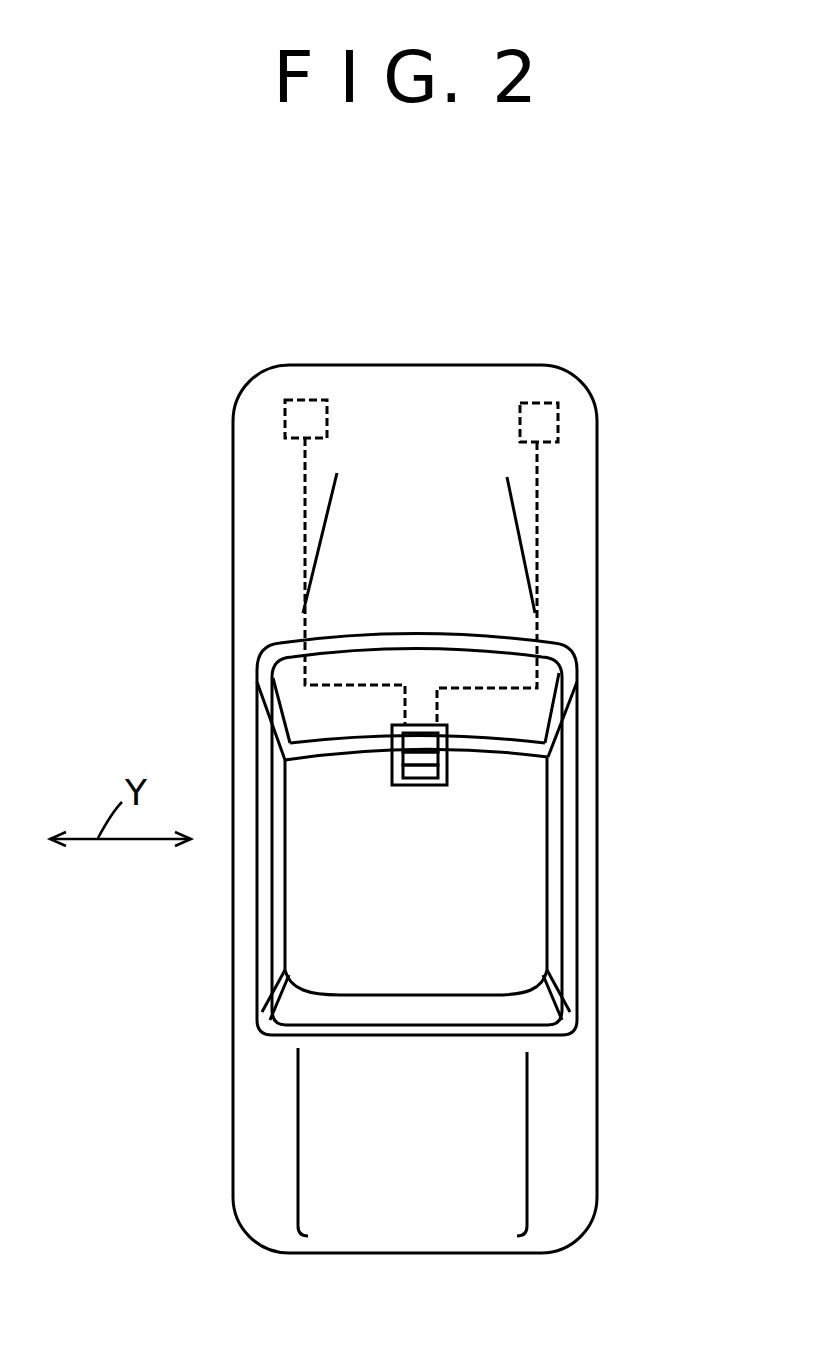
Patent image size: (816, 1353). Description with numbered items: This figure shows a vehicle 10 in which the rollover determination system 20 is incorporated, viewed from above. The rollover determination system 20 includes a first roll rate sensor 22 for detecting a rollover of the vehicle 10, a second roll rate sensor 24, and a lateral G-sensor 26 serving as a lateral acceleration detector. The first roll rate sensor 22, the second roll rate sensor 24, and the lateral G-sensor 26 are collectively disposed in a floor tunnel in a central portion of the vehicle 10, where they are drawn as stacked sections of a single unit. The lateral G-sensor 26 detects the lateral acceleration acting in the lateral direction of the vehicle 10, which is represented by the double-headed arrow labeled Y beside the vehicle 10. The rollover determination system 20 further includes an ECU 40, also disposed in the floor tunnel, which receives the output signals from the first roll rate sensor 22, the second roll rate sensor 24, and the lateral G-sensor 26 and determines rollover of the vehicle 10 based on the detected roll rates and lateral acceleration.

The vehicle 10 is at (563, 1100).
The rollover determination system 20 is at (627, 820).
The first roll rate sensor 22 is at (420, 742).
The second roll rate sensor 24 is at (420, 755).
The lateral G-sensor 26 is at (420, 772).
The ECU 40 is at (387, 768).